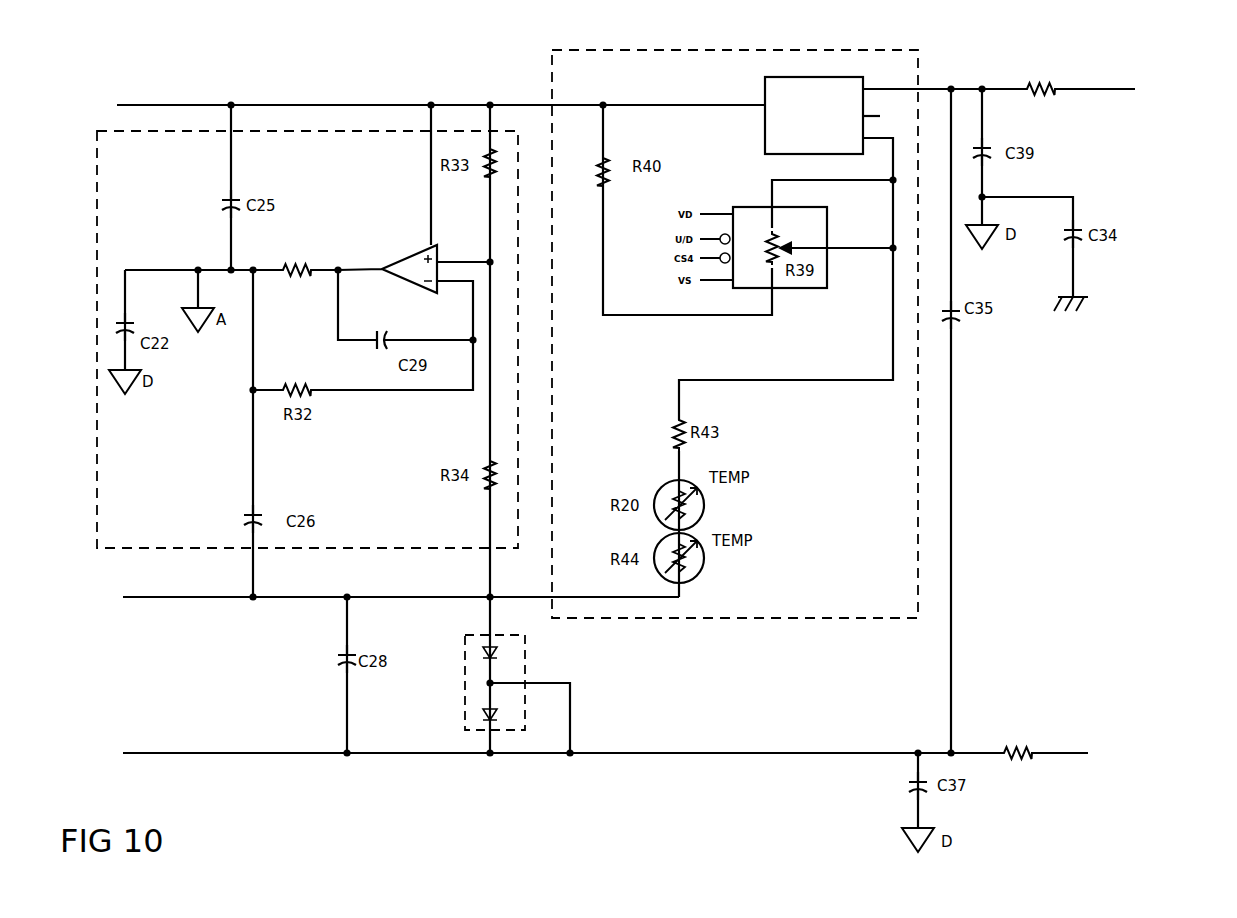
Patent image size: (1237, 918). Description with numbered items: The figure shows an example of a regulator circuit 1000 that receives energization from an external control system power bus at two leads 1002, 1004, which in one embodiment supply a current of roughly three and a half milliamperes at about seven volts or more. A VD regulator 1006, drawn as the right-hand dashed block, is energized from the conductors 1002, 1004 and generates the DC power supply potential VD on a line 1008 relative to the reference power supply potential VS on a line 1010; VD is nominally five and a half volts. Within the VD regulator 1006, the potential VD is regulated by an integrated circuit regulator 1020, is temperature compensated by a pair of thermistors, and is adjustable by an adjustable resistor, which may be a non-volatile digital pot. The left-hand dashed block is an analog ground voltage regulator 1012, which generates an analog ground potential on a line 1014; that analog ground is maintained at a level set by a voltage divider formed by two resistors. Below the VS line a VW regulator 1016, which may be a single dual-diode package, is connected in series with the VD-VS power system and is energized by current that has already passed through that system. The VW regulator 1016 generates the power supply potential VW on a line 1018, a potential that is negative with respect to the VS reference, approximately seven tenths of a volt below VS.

The regulator circuit 1000 is at (447, 774).
The lead 1002 is at (1115, 90).
The lead 1004 is at (1060, 758).
The VD regulator 1006 is at (551, 80).
The line 1008 is at (164, 105).
The line 1010 is at (165, 597).
The analog ground voltage regulator 1012 is at (97, 518).
The line 1014 is at (197, 268).
The VW regulator 1016 is at (465, 690).
The line 1018 is at (190, 753).
The integrated circuit regulator 1020 is at (800, 77).